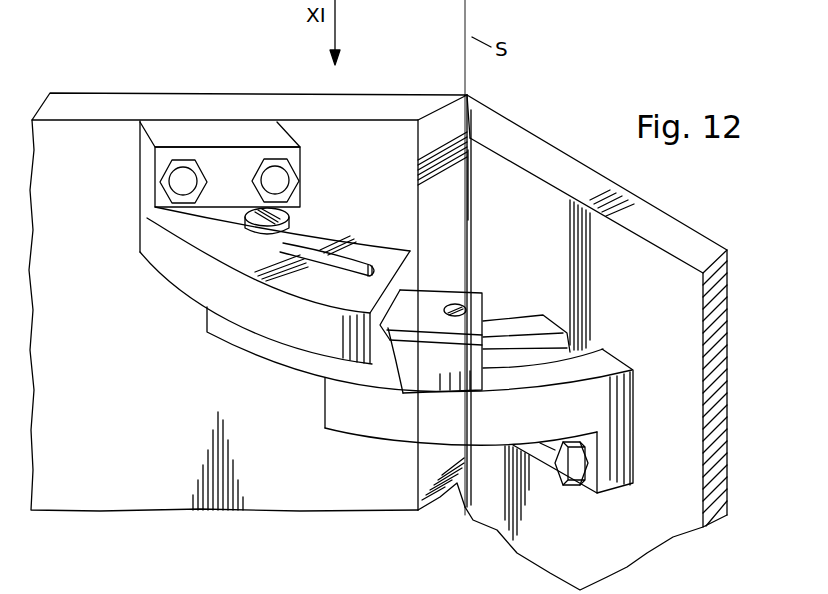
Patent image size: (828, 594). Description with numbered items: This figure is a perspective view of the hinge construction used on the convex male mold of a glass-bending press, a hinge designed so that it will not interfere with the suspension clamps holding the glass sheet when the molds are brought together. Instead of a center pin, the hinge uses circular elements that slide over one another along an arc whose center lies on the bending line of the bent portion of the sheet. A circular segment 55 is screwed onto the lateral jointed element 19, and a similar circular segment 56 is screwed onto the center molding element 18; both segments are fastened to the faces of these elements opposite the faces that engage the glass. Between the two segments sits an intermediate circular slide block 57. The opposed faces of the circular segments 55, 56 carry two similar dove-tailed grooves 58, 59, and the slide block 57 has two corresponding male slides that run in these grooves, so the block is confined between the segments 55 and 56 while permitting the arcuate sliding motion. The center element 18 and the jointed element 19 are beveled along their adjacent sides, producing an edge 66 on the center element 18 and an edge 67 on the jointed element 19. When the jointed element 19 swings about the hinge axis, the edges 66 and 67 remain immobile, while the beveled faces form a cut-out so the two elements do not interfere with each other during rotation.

The center molding element 18 is at (680, 243).
The lateral jointed element 19 is at (173, 100).
The circular segment 55 is at (187, 222).
The circular segment 56 is at (497, 433).
The intermediate circular slide block 57 is at (472, 302).
The dove-tailed groove 58 is at (402, 392).
The dove-tailed groove 59 is at (570, 344).
The edge 66 is at (460, 123).
The edge 67 is at (469, 183).